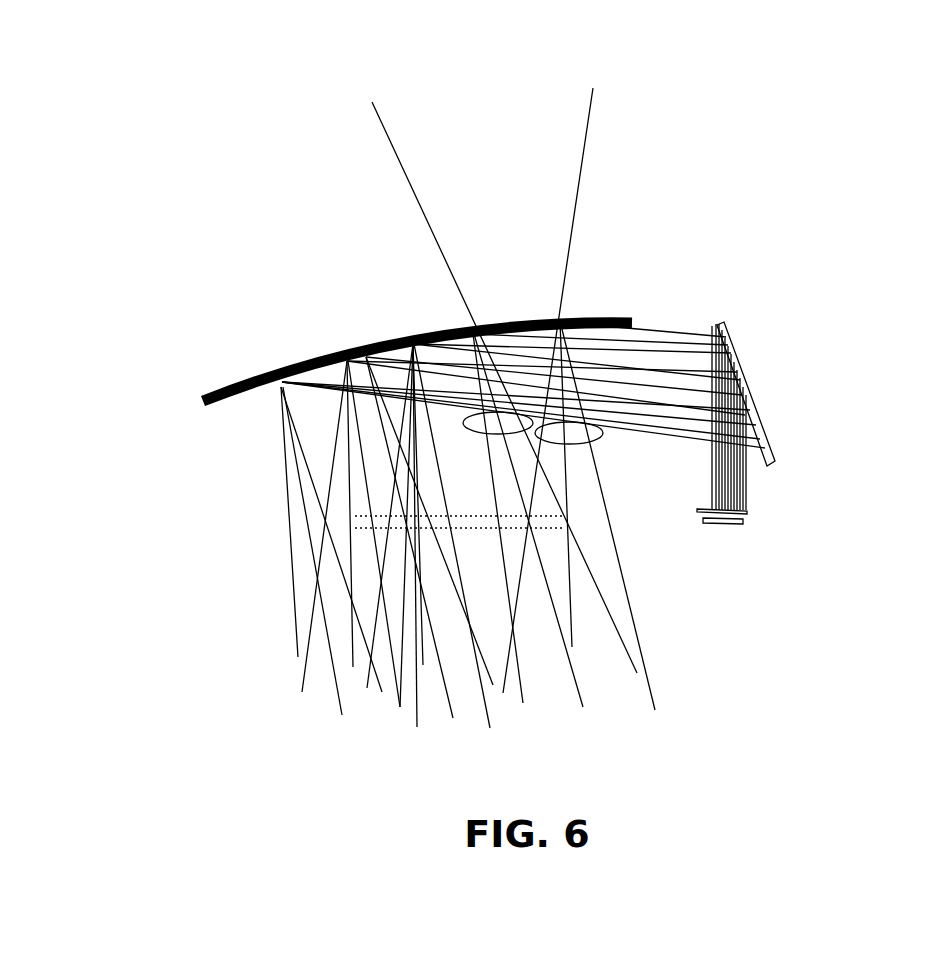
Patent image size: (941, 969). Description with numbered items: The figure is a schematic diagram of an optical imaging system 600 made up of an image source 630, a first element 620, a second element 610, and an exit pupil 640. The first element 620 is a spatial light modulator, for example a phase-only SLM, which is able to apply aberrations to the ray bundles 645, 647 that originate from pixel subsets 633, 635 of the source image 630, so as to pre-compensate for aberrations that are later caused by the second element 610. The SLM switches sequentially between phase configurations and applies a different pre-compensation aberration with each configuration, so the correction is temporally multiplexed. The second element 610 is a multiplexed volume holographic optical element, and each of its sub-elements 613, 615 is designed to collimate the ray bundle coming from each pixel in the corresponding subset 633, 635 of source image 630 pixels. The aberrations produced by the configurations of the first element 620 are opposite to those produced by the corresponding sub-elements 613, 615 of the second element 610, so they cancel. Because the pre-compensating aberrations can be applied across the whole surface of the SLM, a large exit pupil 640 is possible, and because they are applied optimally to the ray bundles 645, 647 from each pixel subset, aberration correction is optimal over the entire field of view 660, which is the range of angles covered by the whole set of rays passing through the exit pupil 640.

The optical imaging system 600 is at (490, 41).
The second element 610 is at (232, 388).
The sub-element 613 is at (265, 364).
The sub-element 615 is at (560, 312).
The first element 620 is at (778, 450).
The image source 630 is at (752, 510).
The pixel subset 633 is at (716, 527).
The pixel subset 635 is at (735, 526).
The exit pupil 640 is at (477, 528).
The ray bundle 645 is at (463, 430).
The ray bundle 647 is at (540, 433).
The field of view 660 is at (587, 133).